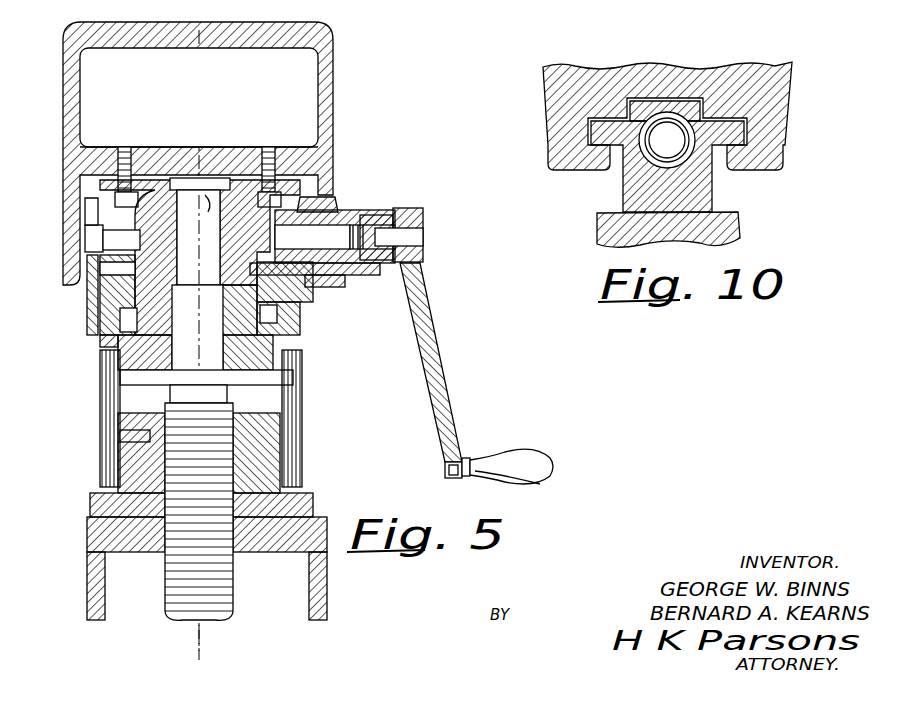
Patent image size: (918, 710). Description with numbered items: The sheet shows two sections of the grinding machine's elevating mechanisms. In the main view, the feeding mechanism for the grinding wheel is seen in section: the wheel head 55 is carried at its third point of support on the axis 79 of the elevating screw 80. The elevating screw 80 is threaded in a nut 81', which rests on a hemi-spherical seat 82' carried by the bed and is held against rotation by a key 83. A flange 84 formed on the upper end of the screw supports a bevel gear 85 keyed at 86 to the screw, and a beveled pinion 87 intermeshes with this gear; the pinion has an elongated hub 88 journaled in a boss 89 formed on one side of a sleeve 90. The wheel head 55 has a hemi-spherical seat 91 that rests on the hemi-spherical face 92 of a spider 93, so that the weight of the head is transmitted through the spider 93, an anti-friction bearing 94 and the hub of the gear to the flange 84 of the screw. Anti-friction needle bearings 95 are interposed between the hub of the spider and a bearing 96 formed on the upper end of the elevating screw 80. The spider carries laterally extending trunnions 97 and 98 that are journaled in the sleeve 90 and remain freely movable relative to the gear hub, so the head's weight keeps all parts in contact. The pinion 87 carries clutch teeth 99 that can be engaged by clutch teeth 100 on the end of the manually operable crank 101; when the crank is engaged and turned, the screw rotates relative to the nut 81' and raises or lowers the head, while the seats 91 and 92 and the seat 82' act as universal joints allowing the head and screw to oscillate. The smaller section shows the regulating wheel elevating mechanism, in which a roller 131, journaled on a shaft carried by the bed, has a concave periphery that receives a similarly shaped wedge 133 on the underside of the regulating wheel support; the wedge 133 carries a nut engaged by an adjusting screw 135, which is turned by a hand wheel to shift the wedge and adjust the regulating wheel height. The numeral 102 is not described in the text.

In FIG. 5, the wheel head 55 is at (333, 80).
In FIG. 5, the axis of the elevating screw 79 is at (205, 662).
In FIG. 5, the elevating screw 80 is at (236, 594).
In FIG. 5, the nut 81' is at (239, 453).
In FIG. 5, the hemi-spherical seat 82' is at (229, 551).
In FIG. 5, the key 83 is at (118, 432).
In FIG. 5, the flange 84 is at (255, 377).
In FIG. 5, the bevel gear 85 is at (305, 318).
In FIG. 5, the key 86 is at (102, 343).
In FIG. 5, the beveled pinion 87 is at (318, 197).
In FIG. 5, the elongated hub 88 is at (340, 210).
In FIG. 5, the boss 89 is at (360, 275).
In FIG. 5, the sleeve 90 is at (305, 290).
In FIG. 5, the hemi-spherical seat 91 is at (265, 168).
In FIG. 5, the hemi-spherical face 92 is at (186, 190).
In FIG. 5, the spider 93 is at (157, 223).
In FIG. 5, the anti-friction bearing 94 is at (90, 304).
In FIG. 5, the anti-friction needle bearings 95 is at (212, 205).
In FIG. 5, the bearing 96 is at (207, 195).
In FIG. 5, the trunnion 97 is at (86, 239).
In FIG. 5, the trunnion 98 is at (372, 212).
In FIG. 5, the clutch teeth 99 is at (400, 210).
In FIG. 5, the clutch teeth 100 is at (400, 275).
In FIG. 5, the manual operable crank 101 is at (422, 258).
In FIG. 10, the block 102 is at (785, 98).
In FIG. 10, the roller 131 is at (735, 226).
In FIG. 10, the wedge 133 is at (705, 196).
In FIG. 10, the adjusting screw 135 is at (668, 136).